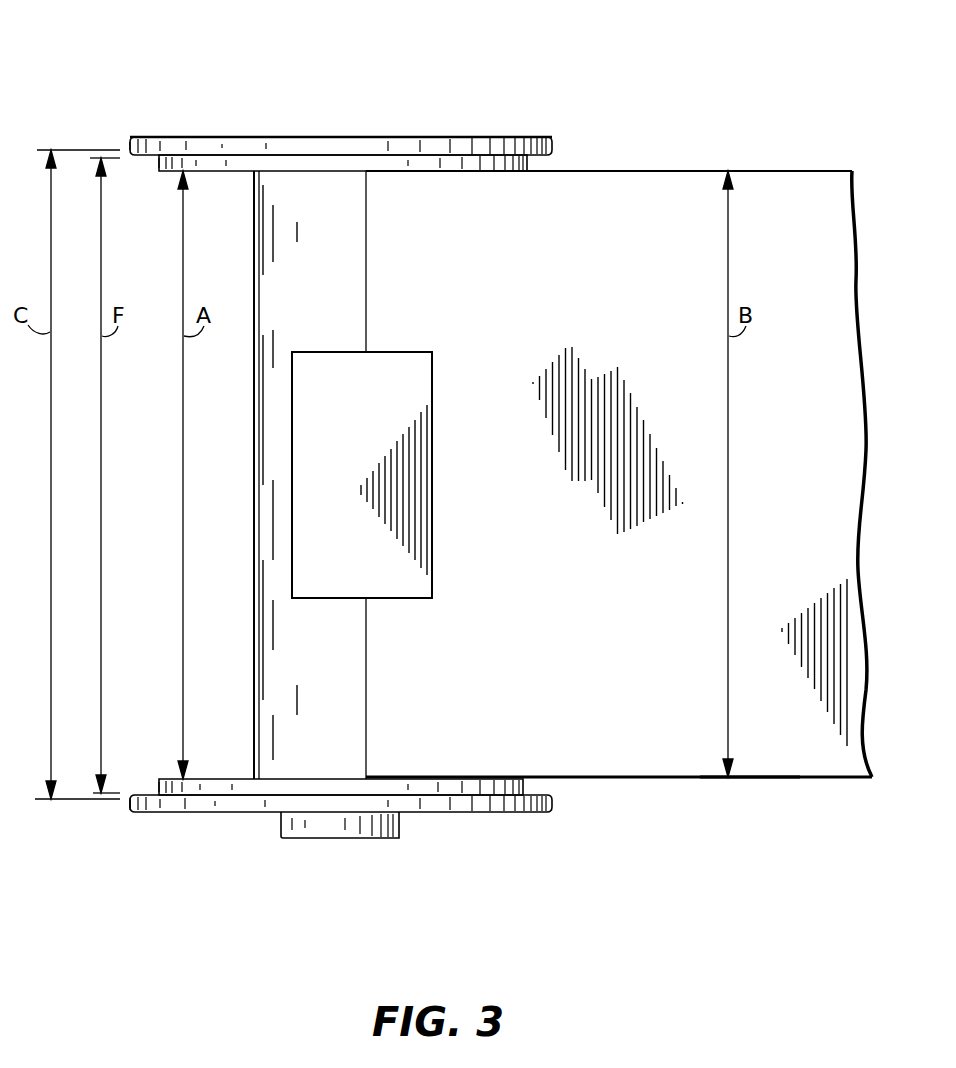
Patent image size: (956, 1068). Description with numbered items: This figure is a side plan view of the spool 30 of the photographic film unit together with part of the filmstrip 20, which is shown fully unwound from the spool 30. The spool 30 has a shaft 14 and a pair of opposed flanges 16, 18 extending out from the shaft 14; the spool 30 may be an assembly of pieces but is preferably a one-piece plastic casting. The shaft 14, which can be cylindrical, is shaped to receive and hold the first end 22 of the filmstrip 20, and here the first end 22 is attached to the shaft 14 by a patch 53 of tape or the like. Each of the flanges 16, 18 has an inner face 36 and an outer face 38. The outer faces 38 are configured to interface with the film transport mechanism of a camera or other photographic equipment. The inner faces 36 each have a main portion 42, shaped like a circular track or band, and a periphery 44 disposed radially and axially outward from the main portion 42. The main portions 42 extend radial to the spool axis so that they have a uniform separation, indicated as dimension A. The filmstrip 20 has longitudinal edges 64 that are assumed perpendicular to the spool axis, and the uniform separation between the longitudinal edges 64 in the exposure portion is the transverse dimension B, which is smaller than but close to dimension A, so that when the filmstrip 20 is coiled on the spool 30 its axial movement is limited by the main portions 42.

The spool 30 is at (450, 102).
The flange 18 is at (363, 137).
The upper flange 16 is at (418, 814).
The outer face 38 is at (155, 137).
The inner face 36 is at (452, 172).
The main portion 42 is at (361, 475).
The shaft 14 is at (332, 284).
The patch 53 is at (412, 400).
The filmstrip 20 is at (785, 232).
The longitudinal edges 64 is at (668, 171).
The first end 22 is at (398, 722).
The periphery 44 is at (130, 803).